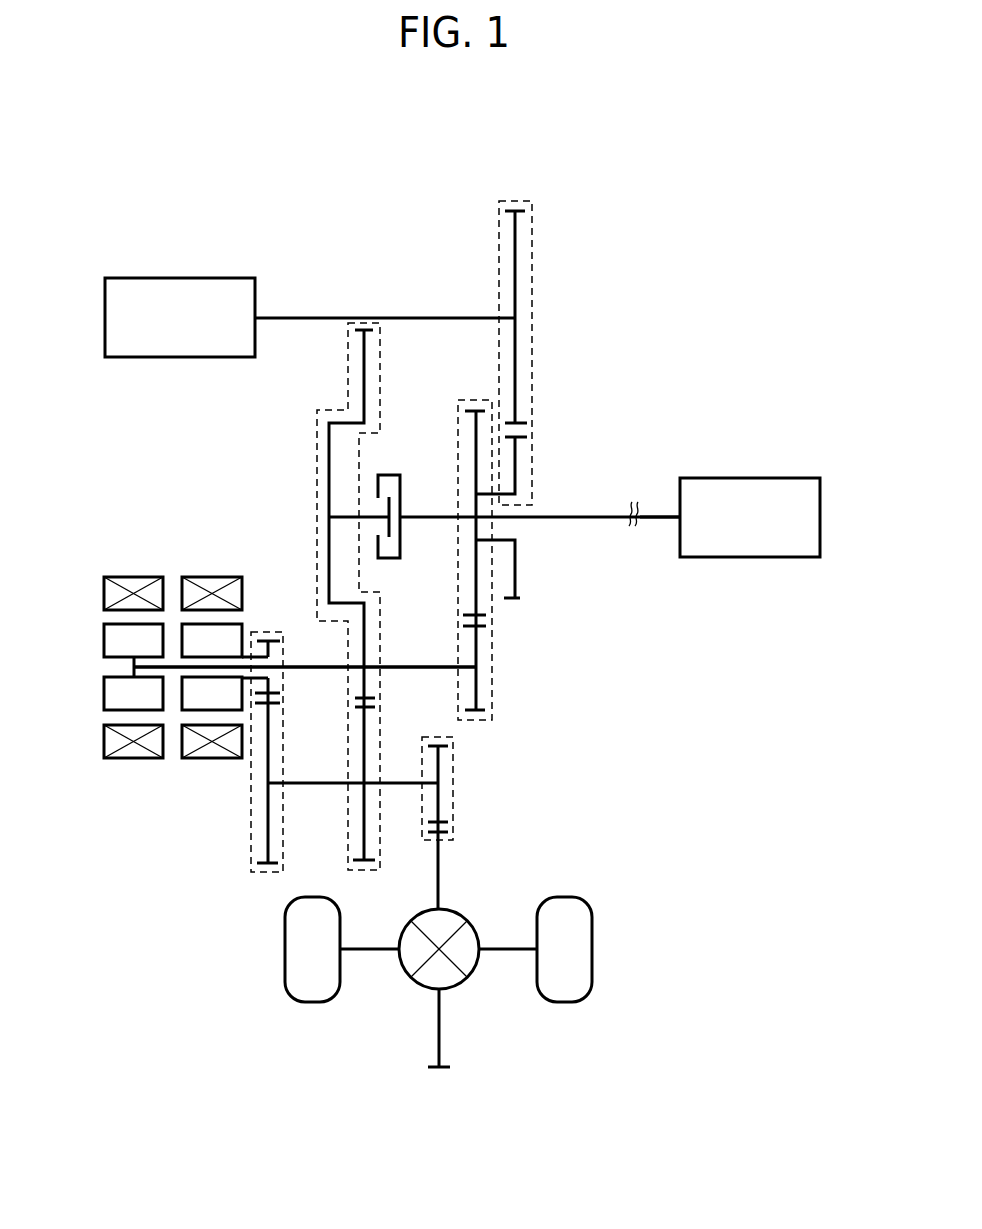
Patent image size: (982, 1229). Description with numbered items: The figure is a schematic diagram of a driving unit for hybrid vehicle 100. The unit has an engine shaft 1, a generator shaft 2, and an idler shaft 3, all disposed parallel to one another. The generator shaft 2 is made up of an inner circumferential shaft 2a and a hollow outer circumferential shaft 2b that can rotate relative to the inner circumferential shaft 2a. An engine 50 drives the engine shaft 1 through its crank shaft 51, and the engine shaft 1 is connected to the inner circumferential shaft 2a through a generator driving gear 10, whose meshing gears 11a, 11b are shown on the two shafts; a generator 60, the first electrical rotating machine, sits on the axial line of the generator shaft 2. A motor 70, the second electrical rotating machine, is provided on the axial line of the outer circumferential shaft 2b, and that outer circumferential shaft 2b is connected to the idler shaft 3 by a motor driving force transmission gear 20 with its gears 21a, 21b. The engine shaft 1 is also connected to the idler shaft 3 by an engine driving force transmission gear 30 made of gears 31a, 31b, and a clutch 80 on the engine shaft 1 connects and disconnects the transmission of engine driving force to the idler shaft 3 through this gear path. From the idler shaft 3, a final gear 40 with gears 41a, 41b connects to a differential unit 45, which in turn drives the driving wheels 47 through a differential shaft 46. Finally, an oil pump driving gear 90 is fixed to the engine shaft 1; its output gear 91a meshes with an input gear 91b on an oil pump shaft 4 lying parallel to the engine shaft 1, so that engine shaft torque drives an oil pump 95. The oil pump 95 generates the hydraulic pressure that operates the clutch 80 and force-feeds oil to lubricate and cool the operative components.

The driving unit for hybrid vehicle 100 is at (592, 106).
The engine shaft 1 is at (592, 517).
The generator shaft 2 is at (400, 667).
The inner circumferential shaft 2a is at (313, 670).
The outer circumferential shaft 2b is at (268, 664).
The idler shaft 3 is at (400, 783).
The oil pump shaft 4 is at (426, 318).
The generator driving gear 10 is at (492, 668).
The gear of generator driving gear 11a is at (468, 408).
The gear of generator driving gear 11b is at (488, 710).
The motor driving force transmission gear 20 is at (250, 852).
The gear of motor driving force transmission gear 21a is at (272, 640).
The gear of motor driving force transmission gear 21b is at (260, 866).
The engine driving force transmission gear 30 is at (382, 850).
The gear of engine driving force transmission gear 31a is at (357, 329).
The gear of engine driving force transmission gear 31b is at (362, 863).
The final gear 40 is at (455, 786).
The gear of final gear 41a is at (450, 822).
The gear of final gear 41b is at (450, 834).
The differential unit 45 is at (408, 992).
The differential shaft 46 is at (509, 949).
The driving wheel 47 is at (313, 1003).
The engine 50 is at (800, 478).
The crank shaft 51 is at (654, 517).
The generator 60 is at (118, 566).
The motor 70 is at (203, 566).
The clutch 80 is at (392, 468).
The oil pump driving gear 90 is at (512, 200).
The output gear 91a is at (522, 598).
The input gear 91b is at (527, 212).
The oil pump 95 is at (138, 278).